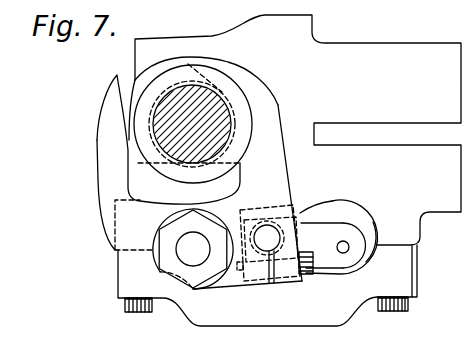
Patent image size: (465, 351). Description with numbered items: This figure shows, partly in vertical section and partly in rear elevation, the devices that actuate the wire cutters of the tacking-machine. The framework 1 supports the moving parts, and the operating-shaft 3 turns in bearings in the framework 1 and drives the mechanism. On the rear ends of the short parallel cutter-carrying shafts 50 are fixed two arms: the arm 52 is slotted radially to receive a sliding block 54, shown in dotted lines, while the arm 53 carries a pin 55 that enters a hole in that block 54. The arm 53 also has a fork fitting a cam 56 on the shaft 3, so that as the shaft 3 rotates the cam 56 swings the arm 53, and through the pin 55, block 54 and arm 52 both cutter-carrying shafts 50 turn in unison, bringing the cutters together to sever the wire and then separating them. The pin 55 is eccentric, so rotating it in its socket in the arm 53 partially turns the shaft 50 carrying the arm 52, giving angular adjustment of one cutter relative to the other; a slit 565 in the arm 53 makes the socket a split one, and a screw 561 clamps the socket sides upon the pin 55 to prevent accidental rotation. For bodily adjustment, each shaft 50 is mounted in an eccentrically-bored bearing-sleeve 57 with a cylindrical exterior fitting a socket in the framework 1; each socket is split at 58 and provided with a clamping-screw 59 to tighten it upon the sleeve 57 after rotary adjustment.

The framework 1 is at (289, 170).
The operating-shaft 3 is at (170, 122).
The cutter-carrying shaft 50 is at (193, 249).
The slotted arm 52 is at (329, 214).
The forked arm 53 is at (237, 282).
The sliding block 54 is at (251, 219).
The eccentric pin 55 is at (278, 228).
The cam 56 is at (148, 66).
The bearing-sleeve 57 is at (377, 215).
The split of socket 58 is at (115, 250).
The clamping-screw 59 is at (153, 304).
The screw 561 is at (308, 277).
The slit 565 is at (272, 286).